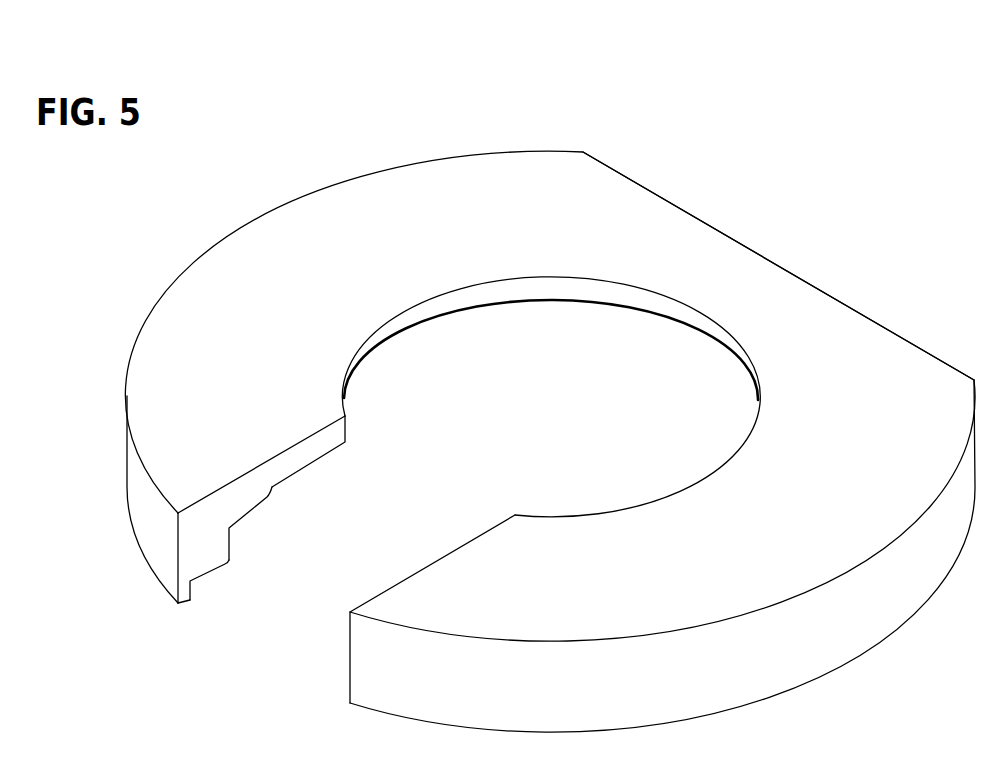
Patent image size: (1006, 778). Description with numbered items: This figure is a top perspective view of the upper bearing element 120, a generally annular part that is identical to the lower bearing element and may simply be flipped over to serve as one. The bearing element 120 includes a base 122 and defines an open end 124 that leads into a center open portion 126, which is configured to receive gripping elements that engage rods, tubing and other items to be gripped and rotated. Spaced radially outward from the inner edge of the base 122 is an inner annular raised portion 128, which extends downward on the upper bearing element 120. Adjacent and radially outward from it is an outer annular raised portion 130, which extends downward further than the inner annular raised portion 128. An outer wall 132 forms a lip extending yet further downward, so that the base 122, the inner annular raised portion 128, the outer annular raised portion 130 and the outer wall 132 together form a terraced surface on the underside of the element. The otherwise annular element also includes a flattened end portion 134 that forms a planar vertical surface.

The upper bearing element 120 is at (518, 128).
The base 122 is at (288, 467).
The open end 124 is at (282, 640).
The center open portion 126 is at (577, 450).
The inner annular raised portion 128 is at (248, 513).
The outer annular raised portion 130 is at (217, 568).
The outer wall 132 is at (181, 605).
The flattened end portion 134 is at (848, 303).